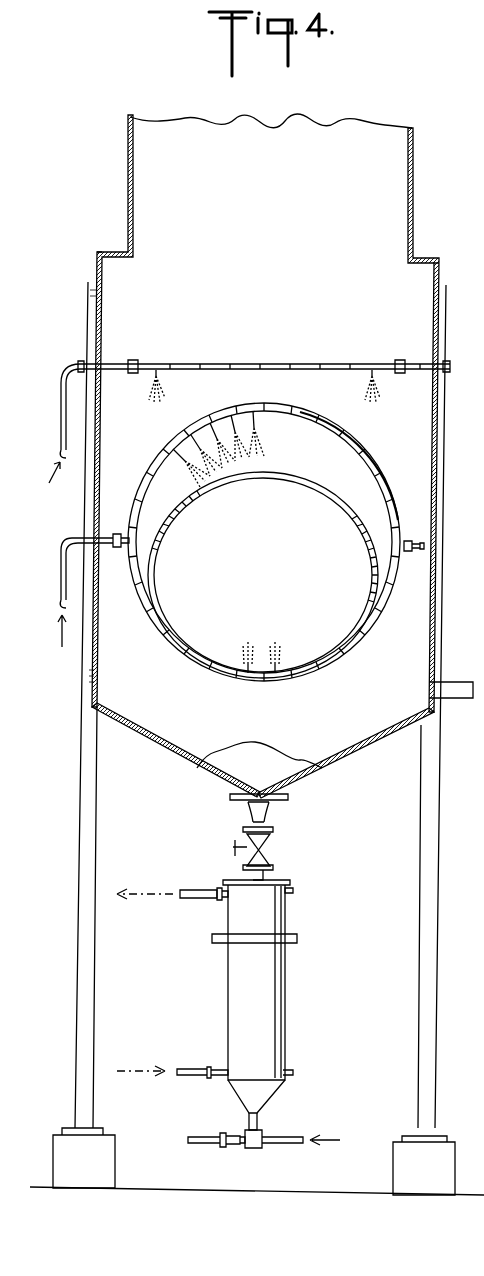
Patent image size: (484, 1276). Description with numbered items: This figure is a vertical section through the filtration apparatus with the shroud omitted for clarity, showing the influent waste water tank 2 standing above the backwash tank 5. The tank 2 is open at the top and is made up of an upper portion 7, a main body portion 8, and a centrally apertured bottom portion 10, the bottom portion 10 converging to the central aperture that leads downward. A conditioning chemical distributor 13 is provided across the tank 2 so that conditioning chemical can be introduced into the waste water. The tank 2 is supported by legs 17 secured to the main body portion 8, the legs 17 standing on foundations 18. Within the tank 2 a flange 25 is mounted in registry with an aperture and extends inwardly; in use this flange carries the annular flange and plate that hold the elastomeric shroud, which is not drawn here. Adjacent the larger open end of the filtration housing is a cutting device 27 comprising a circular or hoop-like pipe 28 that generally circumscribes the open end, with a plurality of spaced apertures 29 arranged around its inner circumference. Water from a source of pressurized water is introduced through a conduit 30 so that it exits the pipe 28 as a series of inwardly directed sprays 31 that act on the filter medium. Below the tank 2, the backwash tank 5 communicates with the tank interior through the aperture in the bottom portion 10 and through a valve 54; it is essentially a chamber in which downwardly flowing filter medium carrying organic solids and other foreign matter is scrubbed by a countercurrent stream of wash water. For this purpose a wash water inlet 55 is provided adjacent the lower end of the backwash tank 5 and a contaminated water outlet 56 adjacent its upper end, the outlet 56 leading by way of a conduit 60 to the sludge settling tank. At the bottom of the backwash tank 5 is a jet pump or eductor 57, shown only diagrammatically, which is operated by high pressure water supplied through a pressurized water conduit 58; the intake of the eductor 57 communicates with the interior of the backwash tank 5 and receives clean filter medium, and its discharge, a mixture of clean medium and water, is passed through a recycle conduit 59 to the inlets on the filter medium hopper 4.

The influent waste water tank 2 is at (425, 187).
The filter medium hopper 4 is at (257, 1132).
The backwash tank 5 is at (232, 986).
The upper portion 7 is at (417, 138).
The main body portion 8 is at (440, 273).
The centrally apertured bottom portion 10 is at (398, 733).
The conditioning chemical distributor 13 is at (115, 362).
The legs 17 is at (95, 968).
The foundations 18 is at (116, 1153).
The flange 25 is at (307, 481).
The cutting device 27 is at (371, 440).
The hoop-like pipe 28 is at (380, 466).
The spaced apertures 29 is at (332, 428).
The conduit 30 is at (60, 577).
The inwardly directed sprays 31 is at (173, 458).
The valve 54 is at (235, 846).
The wash water inlet 55 is at (220, 1068).
The contaminated water outlet 56 is at (222, 903).
The eductor 57 is at (262, 1133).
The pressurized water conduit 58 is at (282, 1146).
The recycle conduit 59 is at (222, 1116).
The conduit 60 is at (195, 890).